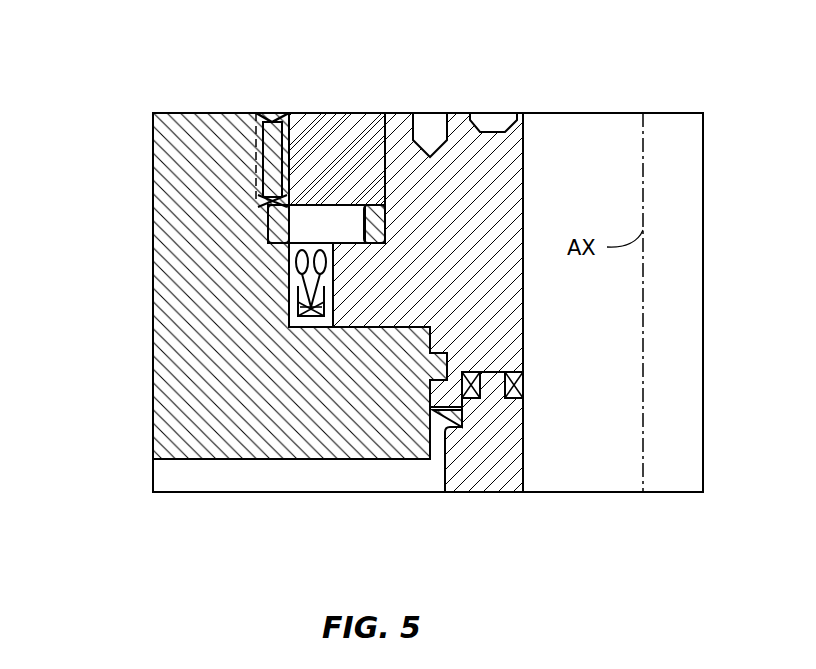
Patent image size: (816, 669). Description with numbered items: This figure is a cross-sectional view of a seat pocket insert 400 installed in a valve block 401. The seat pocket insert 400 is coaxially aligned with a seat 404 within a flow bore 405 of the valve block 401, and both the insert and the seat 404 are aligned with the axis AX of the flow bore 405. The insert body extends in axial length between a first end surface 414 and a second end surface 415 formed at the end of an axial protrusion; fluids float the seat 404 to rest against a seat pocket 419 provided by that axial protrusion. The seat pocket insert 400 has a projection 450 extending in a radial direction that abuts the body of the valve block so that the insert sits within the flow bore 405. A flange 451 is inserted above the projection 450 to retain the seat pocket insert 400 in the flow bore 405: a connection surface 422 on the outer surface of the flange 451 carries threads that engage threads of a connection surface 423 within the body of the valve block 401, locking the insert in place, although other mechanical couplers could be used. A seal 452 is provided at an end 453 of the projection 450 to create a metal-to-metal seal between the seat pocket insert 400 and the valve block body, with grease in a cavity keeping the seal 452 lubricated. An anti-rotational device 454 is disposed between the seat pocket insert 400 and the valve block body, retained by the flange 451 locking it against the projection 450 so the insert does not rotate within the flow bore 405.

The seat pocket insert 400 is at (503, 192).
The valve block 401 is at (128, 296).
The seat 404 is at (503, 462).
The flow bore 405 is at (573, 466).
The first end surface 414 is at (517, 112).
The second end surface 415 is at (443, 416).
The seat pocket 419 is at (446, 437).
The connection surface 422 is at (258, 158).
The connection surface 423 is at (283, 154).
The projection 450 is at (367, 295).
The flange 451 is at (367, 120).
The seal 452 is at (268, 265).
The end 453 is at (300, 306).
The anti-rotational device 454 is at (339, 196).